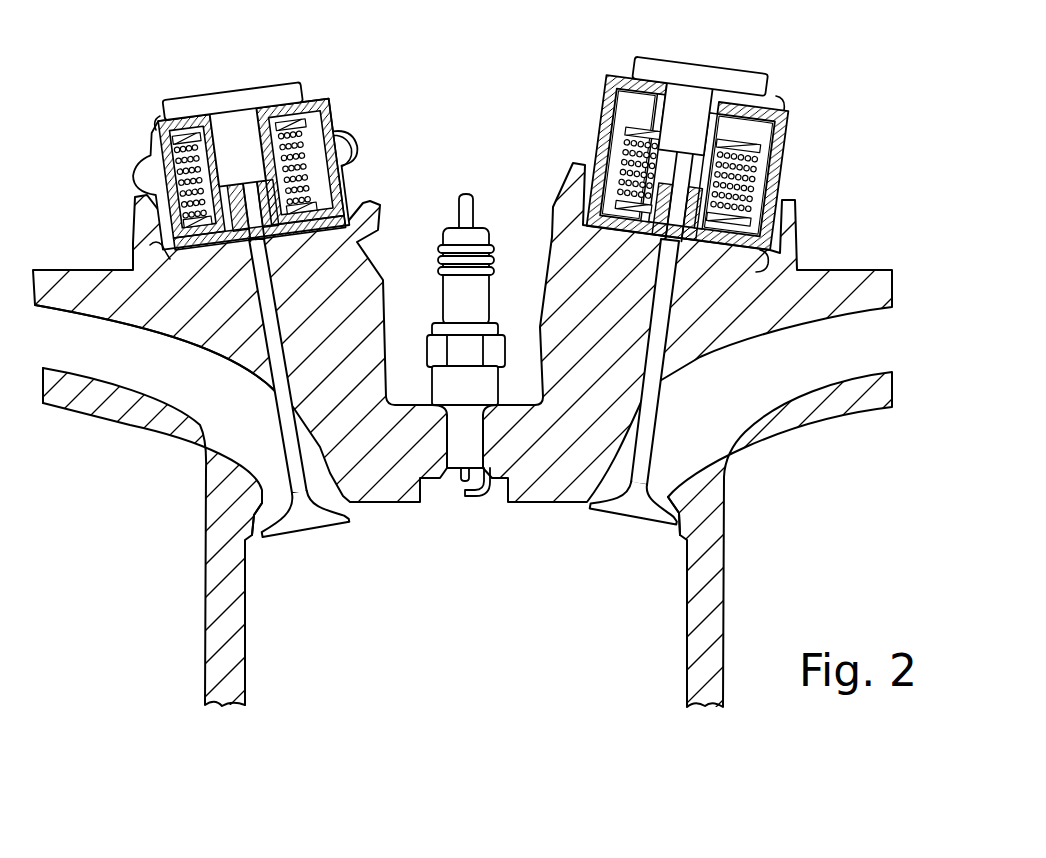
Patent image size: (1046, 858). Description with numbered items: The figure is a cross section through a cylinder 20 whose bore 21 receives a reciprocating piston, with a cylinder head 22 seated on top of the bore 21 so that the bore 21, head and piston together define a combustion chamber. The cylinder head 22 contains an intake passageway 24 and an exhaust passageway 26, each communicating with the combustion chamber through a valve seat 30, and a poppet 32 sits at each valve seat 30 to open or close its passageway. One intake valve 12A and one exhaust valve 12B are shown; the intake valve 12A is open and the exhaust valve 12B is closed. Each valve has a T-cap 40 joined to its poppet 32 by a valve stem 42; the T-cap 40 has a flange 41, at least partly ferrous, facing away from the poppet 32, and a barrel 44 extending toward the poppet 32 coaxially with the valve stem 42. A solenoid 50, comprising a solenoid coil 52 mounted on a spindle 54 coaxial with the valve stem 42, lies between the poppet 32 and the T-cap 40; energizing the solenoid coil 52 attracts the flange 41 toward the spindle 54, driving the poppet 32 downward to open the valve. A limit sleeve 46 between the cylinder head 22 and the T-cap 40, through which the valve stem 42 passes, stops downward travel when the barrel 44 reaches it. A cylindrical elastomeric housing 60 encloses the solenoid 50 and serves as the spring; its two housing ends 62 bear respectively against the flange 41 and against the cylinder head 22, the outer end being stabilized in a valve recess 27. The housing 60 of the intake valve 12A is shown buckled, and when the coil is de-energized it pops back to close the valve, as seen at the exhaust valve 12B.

The intake valve 12A is at (258, 143).
The exhaust valve 12B is at (678, 152).
The cylinder 20 is at (203, 556).
The bore 21 is at (252, 650).
The cylinder head 22 is at (556, 504).
The intake passageway 24 is at (115, 370).
The exhaust passageway 26 is at (846, 368).
The valve recess 27 is at (782, 188).
The valve seat 30 is at (338, 480).
The poppet 32 is at (320, 532).
The T-cap 40 is at (180, 98).
The flange 41 is at (294, 104).
The valve stem 42 is at (277, 437).
The barrel 44 is at (254, 128).
The limit sleeve 46 is at (293, 230).
The solenoid 50 is at (313, 190).
The solenoid coil 52 is at (322, 148).
The spindle 54 is at (303, 118).
The elastomeric housing 60 is at (152, 128).
The housing ends 62 is at (163, 120).